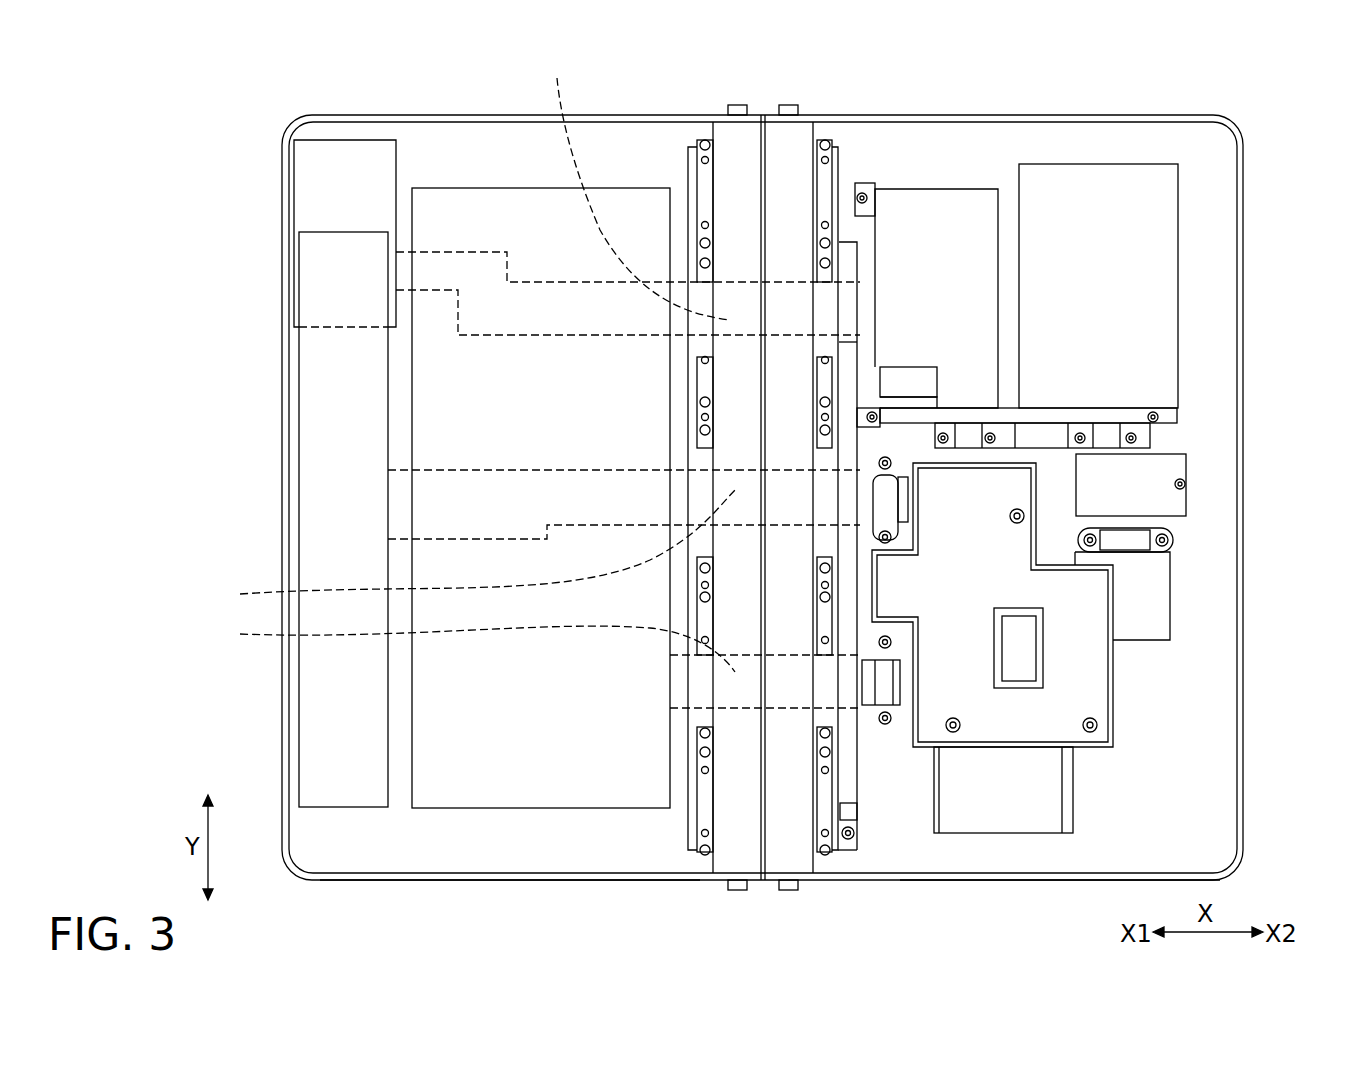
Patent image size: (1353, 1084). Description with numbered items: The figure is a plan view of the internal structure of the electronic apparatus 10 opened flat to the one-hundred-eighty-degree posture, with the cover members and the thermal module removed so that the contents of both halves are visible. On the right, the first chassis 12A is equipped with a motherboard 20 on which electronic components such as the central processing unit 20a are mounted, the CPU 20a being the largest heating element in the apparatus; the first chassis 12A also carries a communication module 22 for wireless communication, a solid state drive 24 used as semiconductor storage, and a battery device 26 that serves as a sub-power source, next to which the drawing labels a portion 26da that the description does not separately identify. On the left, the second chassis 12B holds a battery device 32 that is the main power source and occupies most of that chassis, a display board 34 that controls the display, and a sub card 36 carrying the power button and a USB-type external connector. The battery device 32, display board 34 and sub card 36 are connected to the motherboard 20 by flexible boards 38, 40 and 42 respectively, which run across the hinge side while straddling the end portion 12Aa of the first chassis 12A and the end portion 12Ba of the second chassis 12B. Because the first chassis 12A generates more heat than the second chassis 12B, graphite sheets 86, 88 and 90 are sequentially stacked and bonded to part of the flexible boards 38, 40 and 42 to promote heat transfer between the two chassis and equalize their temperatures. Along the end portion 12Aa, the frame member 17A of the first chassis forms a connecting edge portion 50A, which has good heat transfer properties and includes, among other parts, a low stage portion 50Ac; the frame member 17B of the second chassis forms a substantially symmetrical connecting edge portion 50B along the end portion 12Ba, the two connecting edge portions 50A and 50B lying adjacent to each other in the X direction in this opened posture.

The electronic apparatus 10 is at (258, 86).
The first chassis 12A is at (1048, 106).
The second chassis 12B is at (604, 106).
The end portion 12Aa is at (762, 856).
The end portion 12Ba is at (765, 808).
The frame member 17A is at (1062, 880).
The frame member 17B is at (390, 880).
The motherboard 20 is at (1075, 688).
The central processing unit 20a is at (1018, 662).
The communication module 22 is at (1000, 812).
The solid state drive 24 is at (1150, 466).
The battery device 26 is at (1097, 198).
The battery connector 26da is at (908, 383).
The battery device 32 is at (540, 712).
The display board 34 is at (310, 717).
The sub card 36 is at (310, 188).
The flexible board 38 is at (888, 722).
The flexible board 40 is at (845, 493).
The flexible board 42 is at (845, 300).
The connecting edge portion 50A is at (795, 168).
The connecting edge portion 50B is at (735, 190).
The low stage portion 50Ac is at (850, 768).
The graphite sheet 86 is at (467, 645).
The graphite sheet 88 is at (467, 549).
The graphite sheet 90 is at (636, 184).